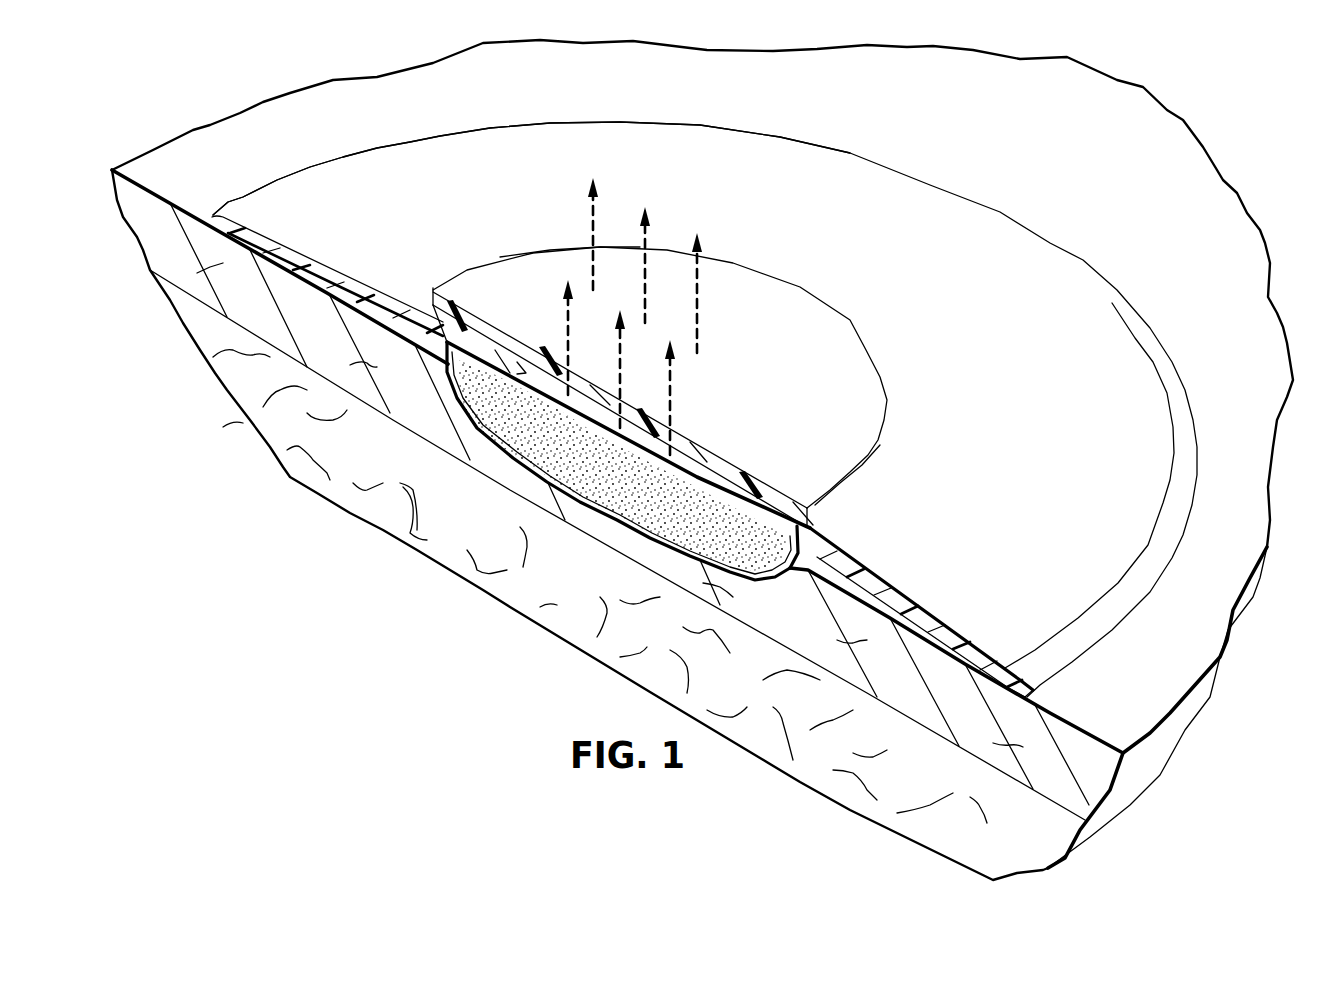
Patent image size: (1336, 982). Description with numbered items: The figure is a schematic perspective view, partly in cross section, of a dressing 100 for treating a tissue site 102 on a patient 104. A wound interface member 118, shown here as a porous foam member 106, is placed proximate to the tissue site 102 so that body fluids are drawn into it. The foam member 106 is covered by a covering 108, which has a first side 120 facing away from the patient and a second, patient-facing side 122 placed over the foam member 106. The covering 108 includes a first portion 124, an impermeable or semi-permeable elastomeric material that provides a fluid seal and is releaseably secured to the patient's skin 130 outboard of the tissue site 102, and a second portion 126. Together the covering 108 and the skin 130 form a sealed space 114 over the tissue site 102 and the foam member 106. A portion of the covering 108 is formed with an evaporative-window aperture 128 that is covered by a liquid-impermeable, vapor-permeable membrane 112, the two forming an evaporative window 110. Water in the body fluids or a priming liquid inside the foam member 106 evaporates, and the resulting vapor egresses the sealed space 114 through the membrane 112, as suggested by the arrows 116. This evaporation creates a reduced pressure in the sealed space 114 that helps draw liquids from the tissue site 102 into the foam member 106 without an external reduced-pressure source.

The dressing 100 is at (878, 277).
The tissue site 102 is at (455, 418).
The patient 104 is at (250, 418).
The foam member 106 is at (635, 487).
The covering 108 is at (1093, 259).
The evaporative window 110 is at (527, 336).
The liquid-impermeable, vapor-permeable membrane 112 is at (562, 240).
The sealed space 114 is at (578, 412).
The arrows 116 is at (699, 318).
The wound interface member 118 is at (640, 522).
The first side 120 is at (497, 143).
The second, patient-facing side 122 is at (407, 318).
The first portion 124 is at (1175, 385).
The second portion 126 is at (873, 400).
The evaporative-window aperture 128 is at (717, 488).
The patient's skin 130 is at (1218, 182).